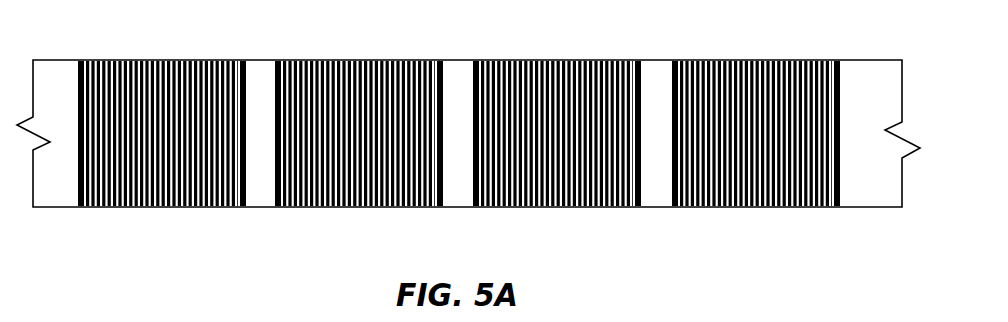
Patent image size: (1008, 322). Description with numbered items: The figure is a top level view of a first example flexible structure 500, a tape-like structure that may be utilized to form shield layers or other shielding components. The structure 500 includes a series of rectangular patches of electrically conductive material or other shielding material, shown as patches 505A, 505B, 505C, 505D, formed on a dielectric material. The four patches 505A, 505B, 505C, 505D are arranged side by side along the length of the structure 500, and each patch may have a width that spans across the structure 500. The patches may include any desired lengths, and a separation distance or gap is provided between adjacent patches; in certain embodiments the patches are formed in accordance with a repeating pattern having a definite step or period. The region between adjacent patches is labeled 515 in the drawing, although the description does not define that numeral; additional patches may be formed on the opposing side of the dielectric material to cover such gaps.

The flexible structure 500 is at (732, 238).
The patch 505A is at (166, 52).
The patch 505B is at (327, 53).
The patch 505C is at (529, 53).
The patch 505D is at (737, 52).
The gap between grating regions 515 is at (260, 223).